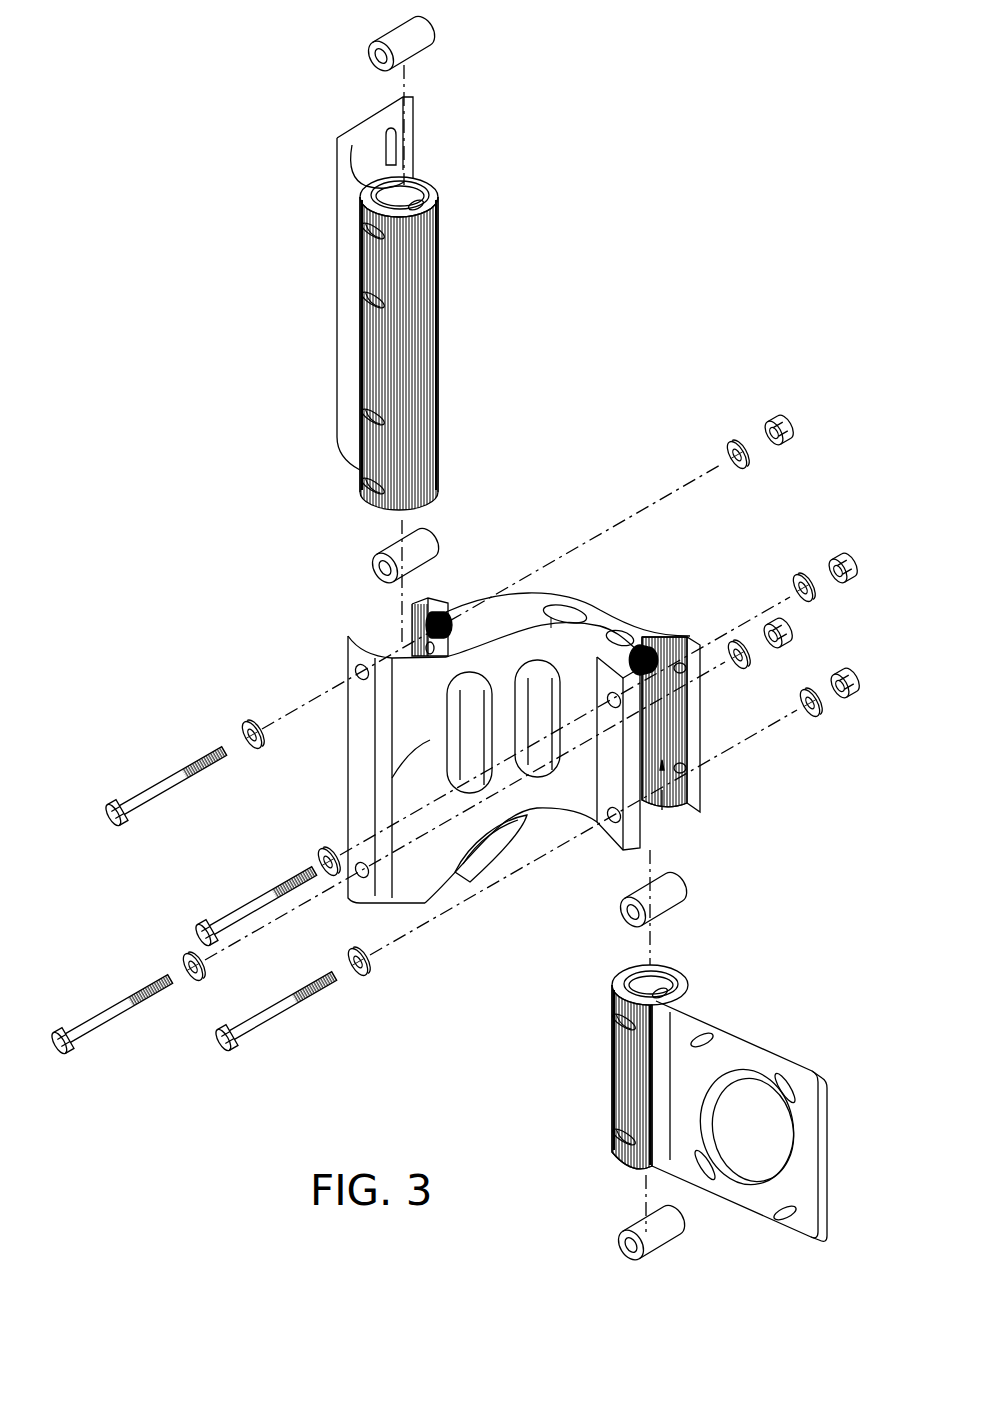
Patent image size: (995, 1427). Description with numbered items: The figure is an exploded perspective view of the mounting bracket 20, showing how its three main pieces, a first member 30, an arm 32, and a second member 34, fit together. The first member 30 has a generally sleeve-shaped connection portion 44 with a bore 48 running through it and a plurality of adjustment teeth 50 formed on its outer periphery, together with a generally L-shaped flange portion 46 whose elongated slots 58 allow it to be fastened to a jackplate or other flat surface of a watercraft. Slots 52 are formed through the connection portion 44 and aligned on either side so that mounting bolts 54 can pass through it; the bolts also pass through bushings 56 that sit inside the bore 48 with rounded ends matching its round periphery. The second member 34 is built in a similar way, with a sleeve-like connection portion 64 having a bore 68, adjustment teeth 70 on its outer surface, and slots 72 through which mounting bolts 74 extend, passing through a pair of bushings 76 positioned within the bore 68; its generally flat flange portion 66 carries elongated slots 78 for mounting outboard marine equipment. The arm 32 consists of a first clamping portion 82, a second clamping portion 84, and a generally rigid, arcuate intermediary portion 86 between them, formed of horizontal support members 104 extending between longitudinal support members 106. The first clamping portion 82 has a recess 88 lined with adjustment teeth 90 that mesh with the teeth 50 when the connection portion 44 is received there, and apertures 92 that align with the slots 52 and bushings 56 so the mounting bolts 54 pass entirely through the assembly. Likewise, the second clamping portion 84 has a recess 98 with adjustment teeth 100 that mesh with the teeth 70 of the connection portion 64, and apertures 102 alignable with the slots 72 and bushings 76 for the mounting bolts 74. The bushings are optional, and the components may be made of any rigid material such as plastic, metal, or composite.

The mounting bracket 20 is at (220, 633).
The first member 30 is at (312, 362).
The arm 32 is at (685, 572).
The second member 34 is at (572, 1102).
The connection portion 44 is at (440, 334).
The flange portion 46 is at (337, 140).
The bore 48 is at (417, 180).
The adjustment teeth 50 is at (430, 275).
The slots 52 is at (430, 200).
The mounting bolts 54 is at (162, 778).
The bushings 56 is at (420, 42).
The elongated slots 58 is at (385, 130).
The connection portion 64 is at (612, 1150).
The flange portion 66 is at (775, 1060).
The bore 68 is at (664, 976).
The adjustment teeth 70 is at (612, 1075).
The slots 72 is at (682, 987).
The mounting bolts 74 is at (242, 905).
The bushings 76 is at (676, 895).
The elongated slots 78 is at (702, 1040).
The first clamping portion 82 is at (348, 826).
The second clamping portion 84 is at (703, 722).
The intermediary portion 86 is at (578, 620).
The recess 88 is at (384, 630).
The adjustment teeth 90 is at (432, 618).
The apertures 92 is at (432, 648).
The recess 98 is at (660, 808).
The adjustment teeth 100 is at (660, 655).
The apertures 102 is at (690, 680).
The horizontal support members 104 is at (545, 612).
The longitudinal support members 106 is at (515, 640).